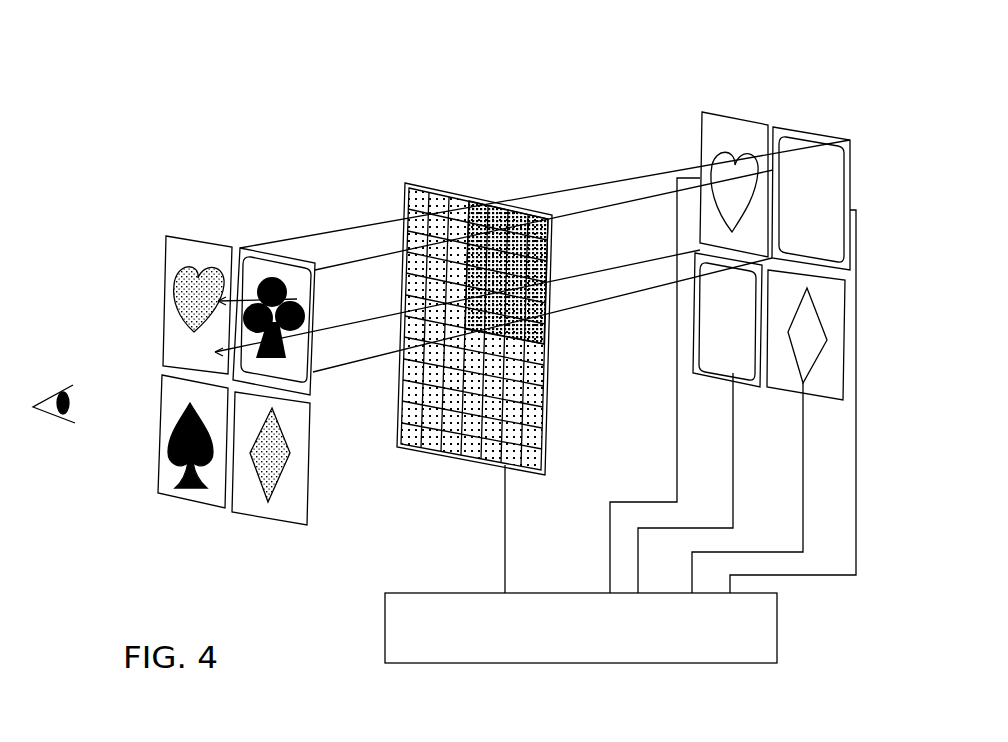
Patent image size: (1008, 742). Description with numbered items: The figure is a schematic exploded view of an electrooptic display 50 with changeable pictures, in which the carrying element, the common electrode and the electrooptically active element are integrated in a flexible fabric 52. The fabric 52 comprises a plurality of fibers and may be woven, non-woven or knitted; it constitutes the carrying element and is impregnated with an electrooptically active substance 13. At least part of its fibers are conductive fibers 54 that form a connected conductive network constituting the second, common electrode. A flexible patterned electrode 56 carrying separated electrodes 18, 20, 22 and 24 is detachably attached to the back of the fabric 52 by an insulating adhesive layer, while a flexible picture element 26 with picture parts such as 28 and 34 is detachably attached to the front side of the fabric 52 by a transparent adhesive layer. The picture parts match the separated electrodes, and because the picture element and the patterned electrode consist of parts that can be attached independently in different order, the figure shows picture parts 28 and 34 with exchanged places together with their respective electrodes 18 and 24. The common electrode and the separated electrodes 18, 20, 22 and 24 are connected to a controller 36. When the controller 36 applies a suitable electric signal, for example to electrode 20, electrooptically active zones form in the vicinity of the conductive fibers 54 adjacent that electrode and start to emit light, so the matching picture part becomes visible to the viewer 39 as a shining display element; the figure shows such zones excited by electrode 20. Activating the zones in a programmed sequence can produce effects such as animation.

The display 50 is at (525, 105).
The flexible patterned picture element 26 is at (212, 270).
The picture part 28 is at (298, 497).
The picture part 34 is at (172, 330).
The viewer 39 is at (55, 403).
The flexible fabric 52 is at (446, 323).
The conductive fibers 54 is at (420, 257).
The electrooptically active (EOA) element 13 is at (447, 437).
The flexible patterned electrode 56 is at (754, 251).
The separated electrode 24 is at (728, 167).
The separated electrode 20 is at (824, 210).
The separated electrode 22 is at (740, 336).
The separated electrode 18 is at (803, 360).
The controller 36 is at (777, 625).